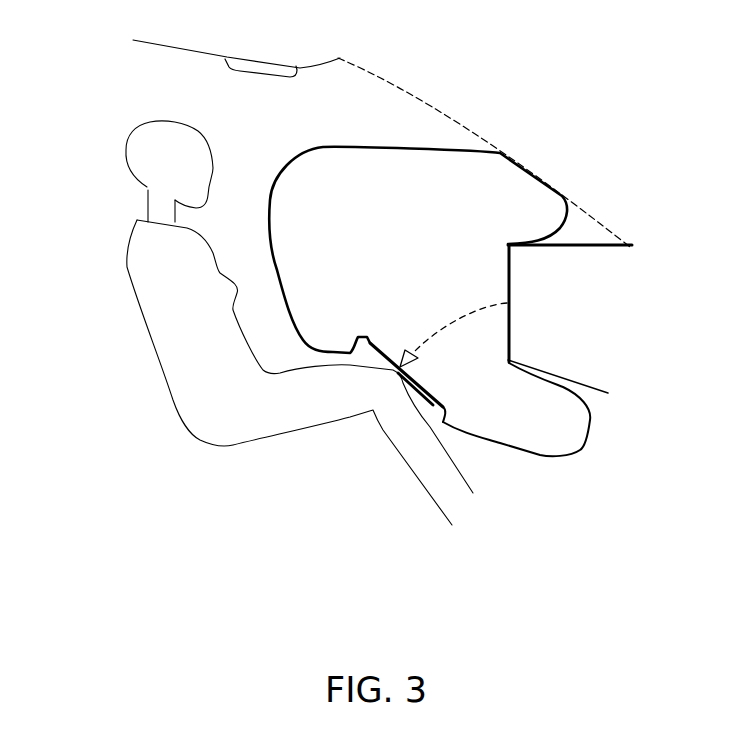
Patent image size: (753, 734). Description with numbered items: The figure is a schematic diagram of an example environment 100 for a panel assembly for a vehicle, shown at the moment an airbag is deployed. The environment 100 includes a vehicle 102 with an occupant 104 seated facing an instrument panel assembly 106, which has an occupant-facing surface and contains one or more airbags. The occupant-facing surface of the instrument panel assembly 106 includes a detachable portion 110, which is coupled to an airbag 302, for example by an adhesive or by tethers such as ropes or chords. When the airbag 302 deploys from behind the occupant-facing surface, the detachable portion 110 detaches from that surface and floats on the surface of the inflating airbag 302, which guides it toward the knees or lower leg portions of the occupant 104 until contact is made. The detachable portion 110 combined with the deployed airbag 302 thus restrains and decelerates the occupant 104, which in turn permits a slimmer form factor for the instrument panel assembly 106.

The environment 100 is at (397, 627).
The vehicle 102 is at (438, 110).
The occupant 104 is at (299, 323).
The instrument panel assembly 106 is at (607, 247).
The detachable portion 110 is at (377, 333).
The airbag 302 is at (320, 148).